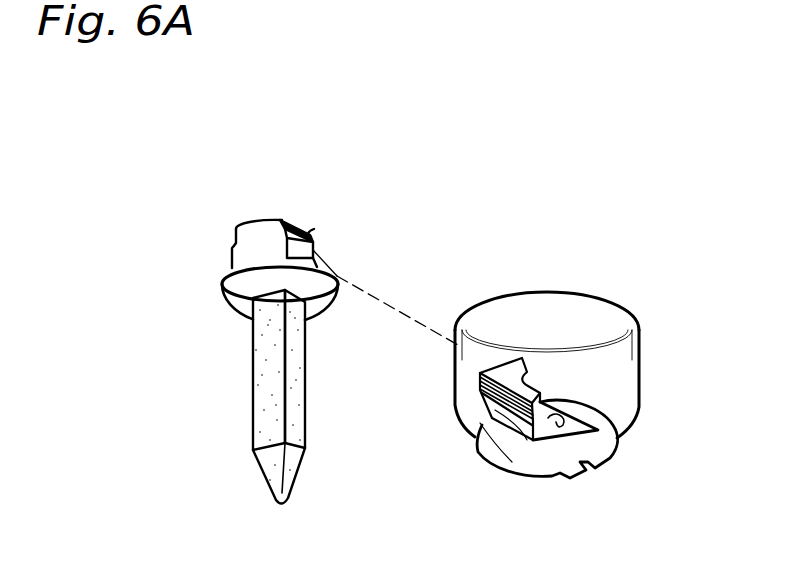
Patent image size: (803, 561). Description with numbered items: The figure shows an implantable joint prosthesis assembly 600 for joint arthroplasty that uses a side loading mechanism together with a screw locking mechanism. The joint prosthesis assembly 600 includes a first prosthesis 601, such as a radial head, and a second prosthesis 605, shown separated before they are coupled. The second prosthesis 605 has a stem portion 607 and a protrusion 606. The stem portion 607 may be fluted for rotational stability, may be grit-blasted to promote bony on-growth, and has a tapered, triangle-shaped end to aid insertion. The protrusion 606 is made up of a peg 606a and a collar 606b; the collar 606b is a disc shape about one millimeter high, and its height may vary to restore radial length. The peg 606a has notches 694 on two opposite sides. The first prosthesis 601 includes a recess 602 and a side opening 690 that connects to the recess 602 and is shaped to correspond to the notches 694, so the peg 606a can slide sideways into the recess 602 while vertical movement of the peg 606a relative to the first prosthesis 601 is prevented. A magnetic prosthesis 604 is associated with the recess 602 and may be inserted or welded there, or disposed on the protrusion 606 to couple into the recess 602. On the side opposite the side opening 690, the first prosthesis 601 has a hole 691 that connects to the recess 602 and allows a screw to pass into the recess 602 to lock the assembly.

The joint prosthesis assembly 600 is at (523, 217).
The first prosthesis 601 is at (612, 290).
The recess 602 is at (512, 432).
The magnetic prosthesis 604 is at (540, 392).
The second prosthesis 605 is at (240, 463).
The protrusion 606 is at (232, 252).
The peg 606a is at (249, 228).
The collar 606b is at (340, 277).
The stem portion 607 is at (262, 393).
The side opening 690 is at (492, 408).
The hole 691 is at (552, 423).
The notches 694 is at (290, 227).